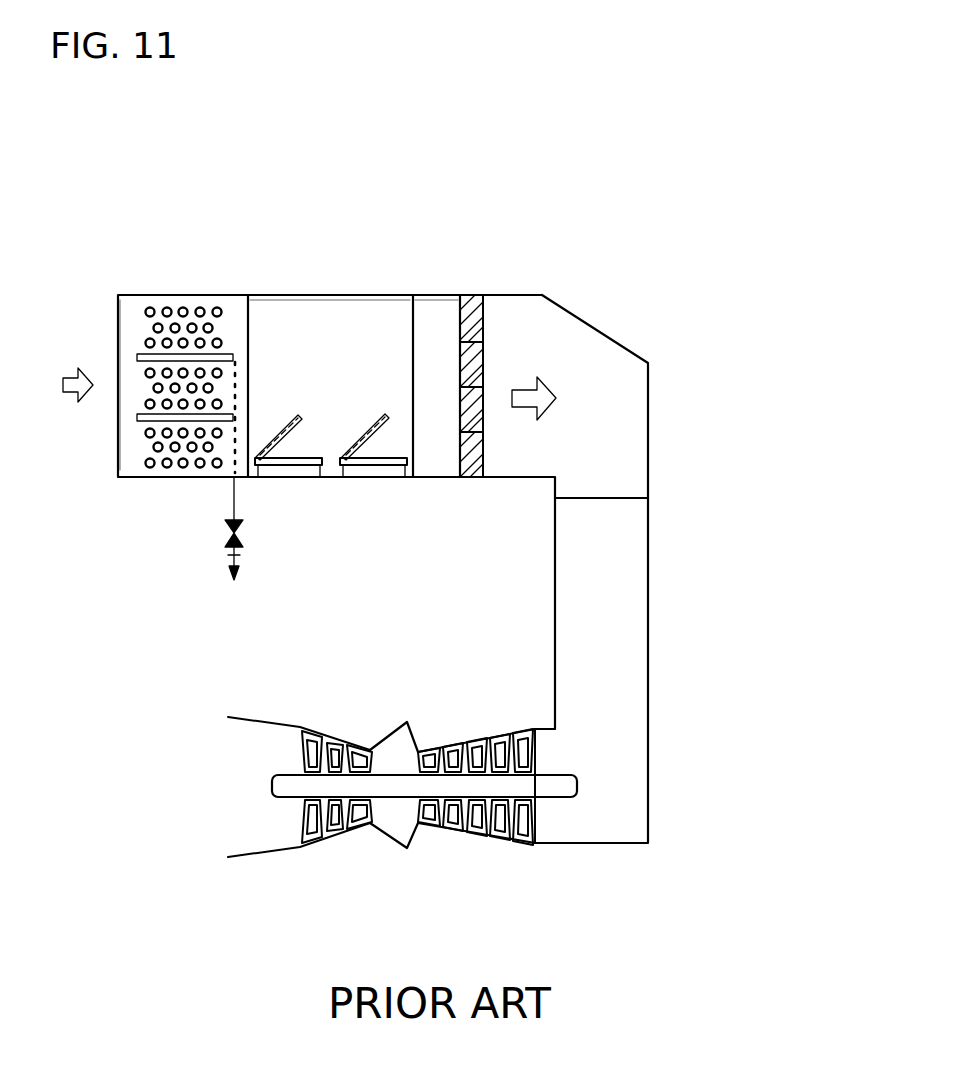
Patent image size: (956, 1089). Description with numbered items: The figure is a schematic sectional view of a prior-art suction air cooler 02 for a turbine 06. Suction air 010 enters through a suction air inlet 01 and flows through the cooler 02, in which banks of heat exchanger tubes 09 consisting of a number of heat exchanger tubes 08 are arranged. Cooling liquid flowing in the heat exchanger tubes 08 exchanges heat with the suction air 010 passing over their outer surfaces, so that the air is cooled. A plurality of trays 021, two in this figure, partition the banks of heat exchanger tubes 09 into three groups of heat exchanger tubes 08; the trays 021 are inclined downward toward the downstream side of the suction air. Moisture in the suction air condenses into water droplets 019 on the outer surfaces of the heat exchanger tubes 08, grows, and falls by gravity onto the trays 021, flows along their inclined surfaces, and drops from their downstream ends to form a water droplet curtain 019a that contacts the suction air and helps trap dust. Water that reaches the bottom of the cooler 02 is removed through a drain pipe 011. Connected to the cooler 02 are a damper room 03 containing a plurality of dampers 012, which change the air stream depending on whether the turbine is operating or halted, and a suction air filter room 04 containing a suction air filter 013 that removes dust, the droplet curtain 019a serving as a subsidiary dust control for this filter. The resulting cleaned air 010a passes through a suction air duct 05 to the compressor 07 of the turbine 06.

The suction air inlet 01 is at (118, 304).
The suction air cooler 02 is at (141, 288).
The damper room 03 is at (327, 295).
The suction air filter room 04 is at (435, 295).
The suction air duct 05 is at (592, 312).
The turbine 06 is at (449, 850).
The compressor 07 is at (500, 734).
The heat exchanger tubes 08 is at (217, 300).
The banks of heat exchanger tubes 09 is at (186, 295).
The suction air 010 is at (62, 380).
The cleaned air 010a is at (524, 388).
The drain pipe 011 is at (240, 553).
The dampers 012 is at (290, 468).
The suction air filter 013 is at (470, 298).
The water droplets 019 is at (243, 362).
The water droplet curtain 019a is at (240, 480).
The trays 021 is at (137, 357).